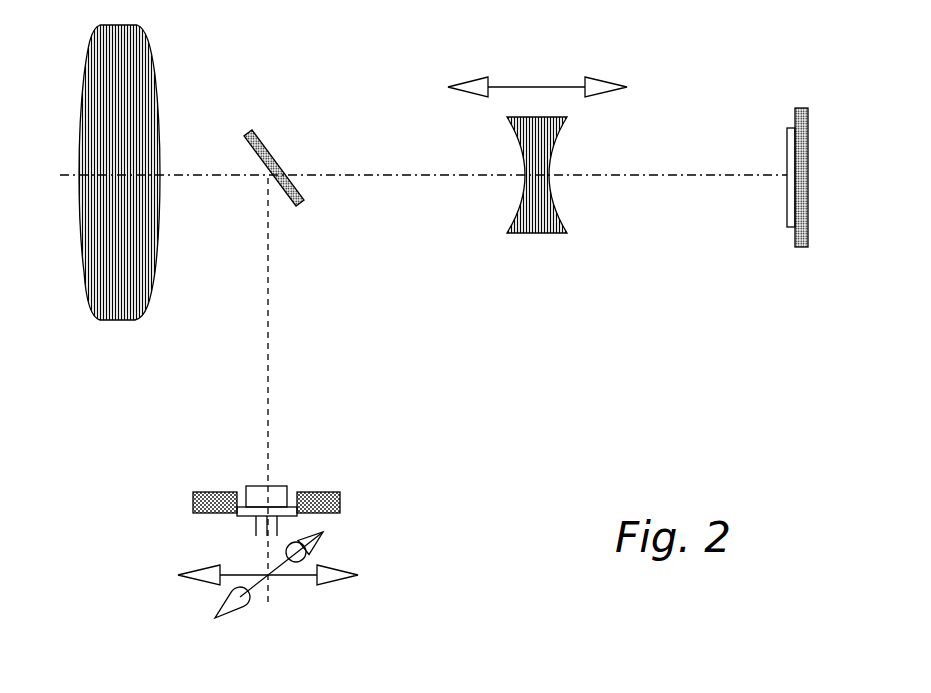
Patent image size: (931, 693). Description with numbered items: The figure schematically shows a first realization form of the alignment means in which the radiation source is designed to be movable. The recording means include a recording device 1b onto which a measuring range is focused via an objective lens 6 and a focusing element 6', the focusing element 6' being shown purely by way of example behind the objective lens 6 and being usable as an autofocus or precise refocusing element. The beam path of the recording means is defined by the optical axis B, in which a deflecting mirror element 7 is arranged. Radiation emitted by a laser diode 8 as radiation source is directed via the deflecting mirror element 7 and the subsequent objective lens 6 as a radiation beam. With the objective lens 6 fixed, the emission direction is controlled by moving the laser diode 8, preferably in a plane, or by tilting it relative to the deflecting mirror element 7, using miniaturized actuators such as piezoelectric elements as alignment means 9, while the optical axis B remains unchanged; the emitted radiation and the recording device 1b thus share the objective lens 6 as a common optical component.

The objective lens 6 is at (154, 209).
The focusing element 6' is at (579, 246).
The deflecting mirror element 7 is at (260, 137).
The laser diode 8 is at (273, 497).
The alignment means 9 is at (333, 515).
The recording device 1b is at (793, 215).
The optical axis B is at (423, 157).